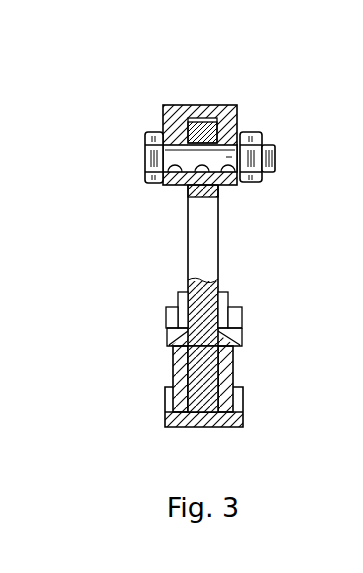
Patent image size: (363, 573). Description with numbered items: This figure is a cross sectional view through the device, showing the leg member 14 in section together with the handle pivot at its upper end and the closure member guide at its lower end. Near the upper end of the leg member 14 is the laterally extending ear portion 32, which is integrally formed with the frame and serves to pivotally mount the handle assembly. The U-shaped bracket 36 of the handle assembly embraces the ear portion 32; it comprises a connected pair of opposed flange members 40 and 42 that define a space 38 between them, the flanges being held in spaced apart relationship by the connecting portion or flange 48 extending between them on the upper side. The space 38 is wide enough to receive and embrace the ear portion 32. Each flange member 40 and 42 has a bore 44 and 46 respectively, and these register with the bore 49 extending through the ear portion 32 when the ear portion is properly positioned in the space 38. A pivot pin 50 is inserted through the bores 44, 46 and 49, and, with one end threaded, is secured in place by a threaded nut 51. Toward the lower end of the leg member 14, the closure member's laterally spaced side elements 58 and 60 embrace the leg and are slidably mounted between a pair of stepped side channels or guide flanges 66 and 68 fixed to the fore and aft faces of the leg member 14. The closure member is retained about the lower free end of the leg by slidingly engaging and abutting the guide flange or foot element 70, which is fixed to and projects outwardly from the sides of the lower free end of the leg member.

The leg member 14 is at (187, 258).
The ear portion 32 is at (170, 121).
The U-shaped bracket 36 is at (225, 105).
The space 38 is at (195, 105).
The flange member 40 is at (164, 107).
The flange member 42 is at (240, 125).
The bore 44 is at (172, 186).
The bore 46 is at (233, 186).
The connecting portion or flange 48 is at (204, 105).
The bore 49 is at (203, 192).
The pivot pin 50 is at (146, 158).
The threaded nut 51 is at (262, 134).
The side element 58 is at (230, 370).
The side element 60 is at (185, 371).
The guide flange 66 is at (165, 318).
The guide flange 68 is at (243, 318).
The foot element 70 is at (203, 415).